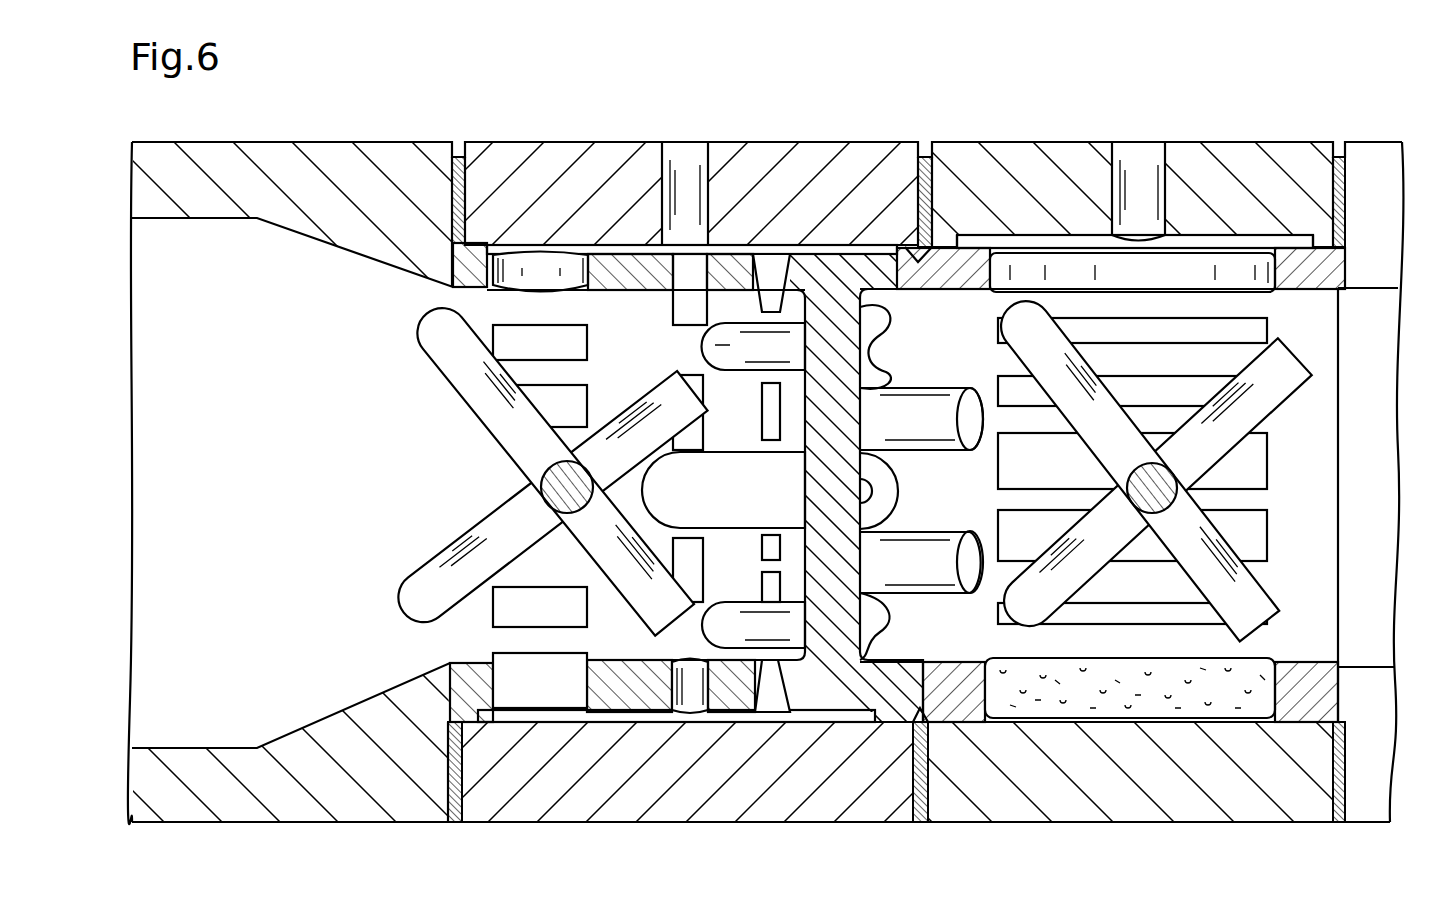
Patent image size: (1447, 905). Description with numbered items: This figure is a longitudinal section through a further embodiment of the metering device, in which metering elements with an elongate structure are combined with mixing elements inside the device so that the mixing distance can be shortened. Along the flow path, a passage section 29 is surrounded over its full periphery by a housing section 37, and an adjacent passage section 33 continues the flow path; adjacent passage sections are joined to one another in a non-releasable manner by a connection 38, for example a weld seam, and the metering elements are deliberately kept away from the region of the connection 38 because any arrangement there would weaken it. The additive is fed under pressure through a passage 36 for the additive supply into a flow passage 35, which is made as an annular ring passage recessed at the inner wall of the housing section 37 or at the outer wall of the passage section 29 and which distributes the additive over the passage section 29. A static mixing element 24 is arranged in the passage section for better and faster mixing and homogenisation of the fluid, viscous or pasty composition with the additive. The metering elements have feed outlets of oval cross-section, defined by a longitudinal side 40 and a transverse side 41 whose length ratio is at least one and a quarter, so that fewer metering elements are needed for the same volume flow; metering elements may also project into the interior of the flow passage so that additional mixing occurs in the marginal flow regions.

The passage section 33 is at (357, 162).
The housing section 37 is at (496, 155).
The flow passage 35 is at (563, 230).
The passage for the additive supply 36 is at (699, 155).
The passage section 29 is at (853, 260).
The static mixing element 24 is at (402, 597).
The transverse side 41 is at (1268, 538).
The longitudinal side 40 is at (1100, 623).
The connection 38 is at (1338, 690).